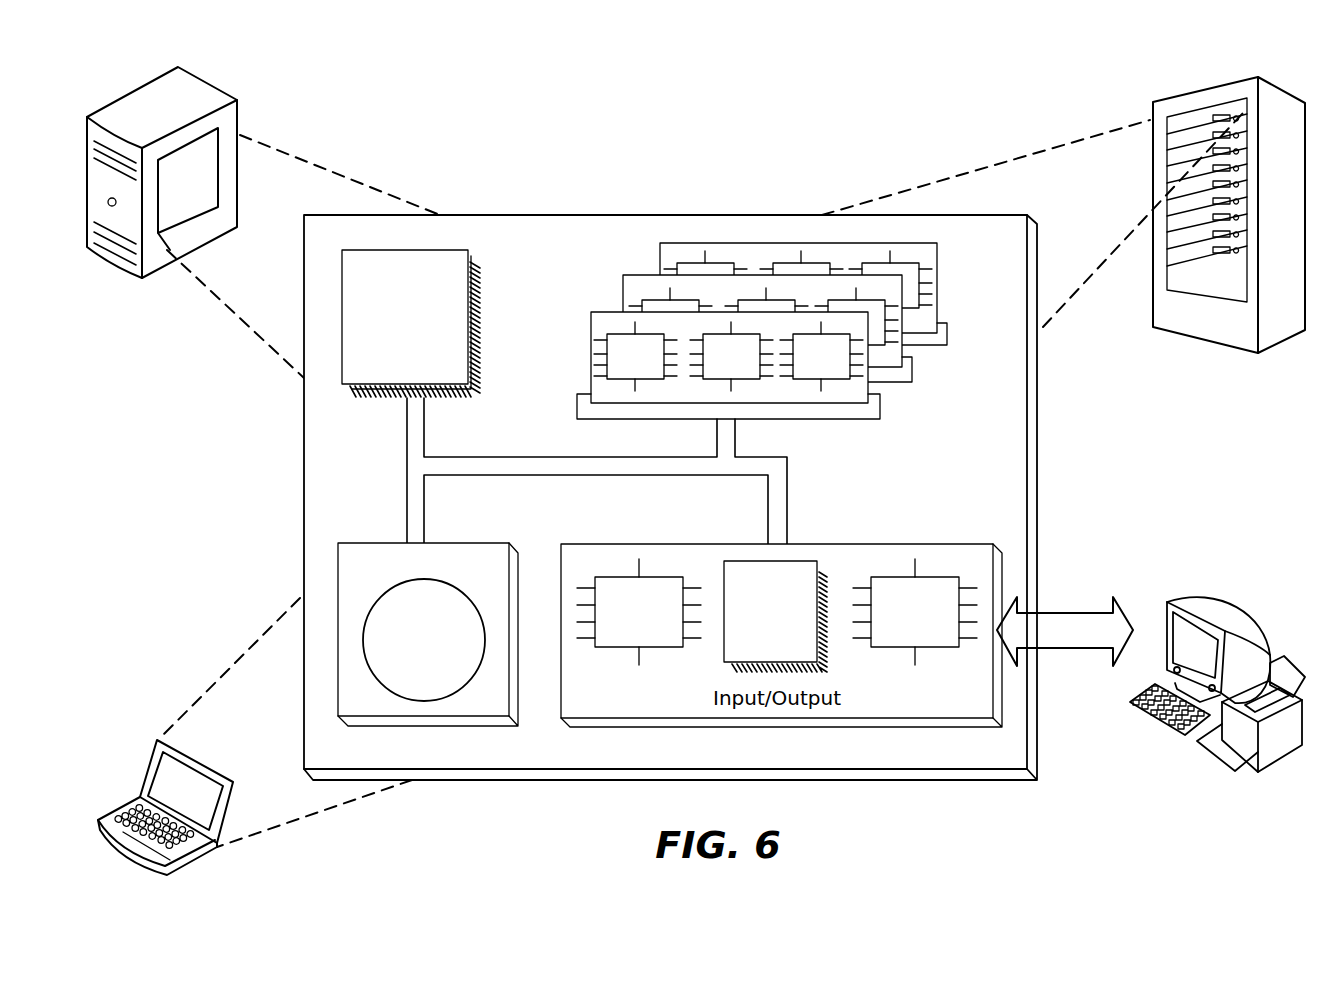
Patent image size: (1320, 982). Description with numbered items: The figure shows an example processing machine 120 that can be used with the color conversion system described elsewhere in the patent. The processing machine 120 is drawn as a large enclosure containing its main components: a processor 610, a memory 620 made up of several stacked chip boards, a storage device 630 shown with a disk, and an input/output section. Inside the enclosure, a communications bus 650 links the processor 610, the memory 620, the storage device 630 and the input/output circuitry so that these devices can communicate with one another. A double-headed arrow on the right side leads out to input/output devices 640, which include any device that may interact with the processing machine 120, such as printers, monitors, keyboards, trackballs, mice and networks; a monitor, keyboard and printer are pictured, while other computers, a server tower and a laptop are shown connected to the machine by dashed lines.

The processing machine 120 is at (418, 114).
The processor 610 is at (447, 250).
The memory 620 is at (936, 376).
The storage device 630 is at (338, 578).
The input/output devices 640 is at (1165, 608).
The communications bus 650 is at (585, 477).